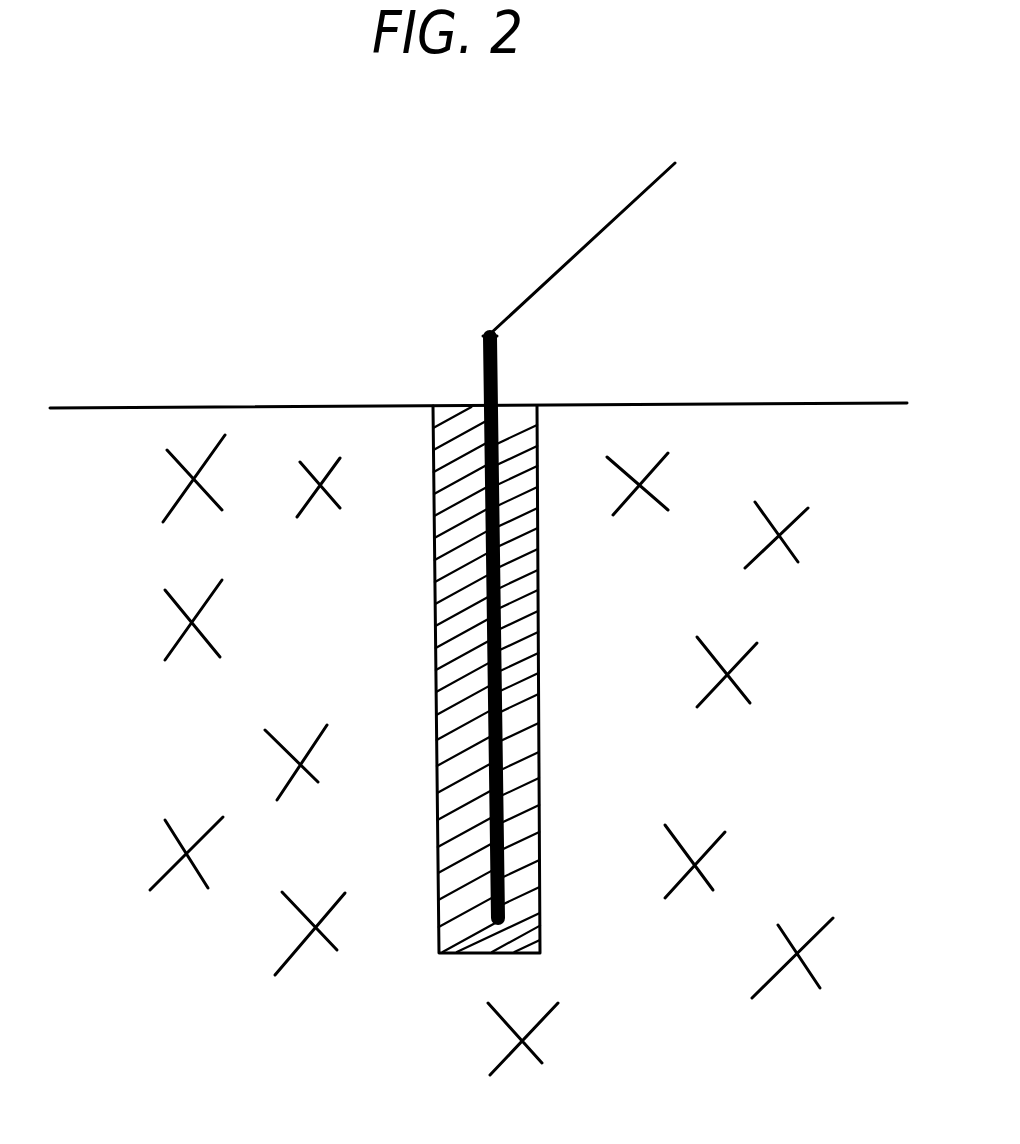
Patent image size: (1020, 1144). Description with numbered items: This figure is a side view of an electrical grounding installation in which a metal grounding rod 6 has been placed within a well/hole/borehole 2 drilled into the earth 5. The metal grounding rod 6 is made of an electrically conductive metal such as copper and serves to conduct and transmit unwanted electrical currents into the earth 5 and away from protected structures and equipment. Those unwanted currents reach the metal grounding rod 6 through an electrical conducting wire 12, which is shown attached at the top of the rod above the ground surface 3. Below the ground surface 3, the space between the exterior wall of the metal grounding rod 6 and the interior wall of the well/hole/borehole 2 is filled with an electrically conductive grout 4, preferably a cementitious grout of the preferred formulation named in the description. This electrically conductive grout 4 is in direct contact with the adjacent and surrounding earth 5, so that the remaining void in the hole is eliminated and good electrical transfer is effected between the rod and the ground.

The well/hole/borehole 2 is at (537, 585).
The ground surface 3 is at (273, 405).
The electrically conductive grout 4 is at (463, 632).
The earth 5 is at (300, 763).
The metal grounding rod 6 is at (503, 747).
The electrical conducting wire 12 is at (570, 265).